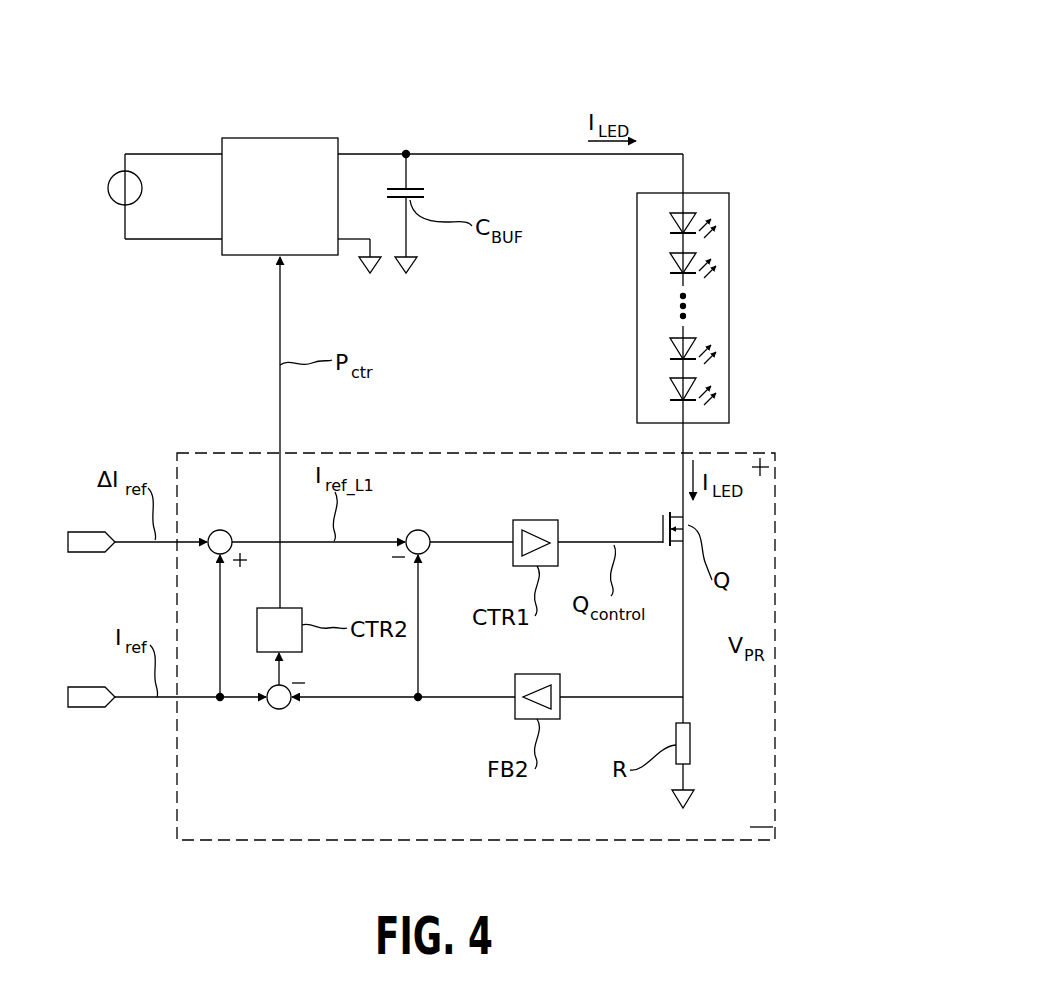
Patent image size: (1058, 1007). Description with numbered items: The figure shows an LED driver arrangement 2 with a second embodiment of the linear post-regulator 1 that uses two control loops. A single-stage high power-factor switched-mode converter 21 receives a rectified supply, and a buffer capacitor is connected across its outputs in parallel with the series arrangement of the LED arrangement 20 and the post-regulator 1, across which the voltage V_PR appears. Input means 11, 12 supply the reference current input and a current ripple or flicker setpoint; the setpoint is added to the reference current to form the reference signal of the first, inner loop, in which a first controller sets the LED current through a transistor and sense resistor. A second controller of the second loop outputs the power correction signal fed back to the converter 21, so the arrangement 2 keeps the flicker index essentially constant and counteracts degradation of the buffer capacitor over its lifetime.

The linear post-regulator 1 is at (685, 842).
The LED lighting arrangement 2 is at (677, 113).
The input means 11 is at (90, 707).
The input means 12 is at (90, 552).
The LED arrangement 20 is at (729, 213).
The switched-mode converter 21 is at (285, 138).